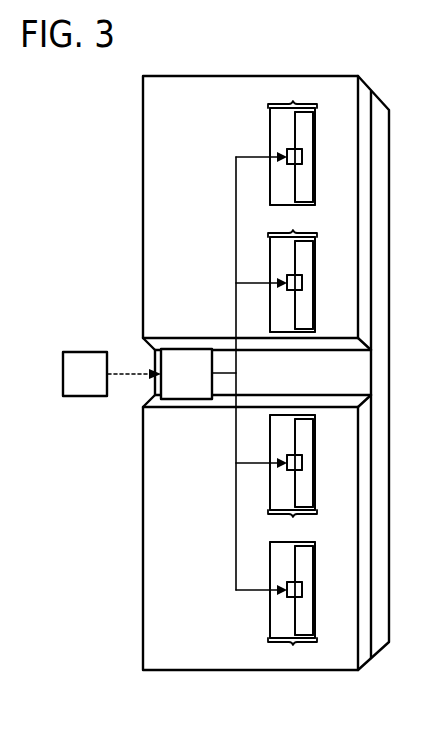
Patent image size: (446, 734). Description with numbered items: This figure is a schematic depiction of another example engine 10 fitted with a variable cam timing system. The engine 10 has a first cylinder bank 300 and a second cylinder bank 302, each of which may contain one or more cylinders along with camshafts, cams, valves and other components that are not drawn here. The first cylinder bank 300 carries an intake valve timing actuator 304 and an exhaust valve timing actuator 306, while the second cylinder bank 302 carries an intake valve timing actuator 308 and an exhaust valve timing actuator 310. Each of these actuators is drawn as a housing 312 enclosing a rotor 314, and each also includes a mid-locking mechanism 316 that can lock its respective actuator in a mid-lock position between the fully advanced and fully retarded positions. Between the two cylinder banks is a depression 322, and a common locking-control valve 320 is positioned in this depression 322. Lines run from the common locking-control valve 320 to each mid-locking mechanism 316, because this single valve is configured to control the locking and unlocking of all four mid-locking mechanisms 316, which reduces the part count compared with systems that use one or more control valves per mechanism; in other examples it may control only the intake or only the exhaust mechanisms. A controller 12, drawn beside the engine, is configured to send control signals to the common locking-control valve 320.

The engine 10 is at (227, 66).
The controller 12 is at (94, 384).
The first cylinder bank 300 is at (143, 143).
The second cylinder bank 302 is at (143, 443).
The intake valve timing actuator 304 is at (292, 140).
The exhaust valve timing actuator 306 is at (292, 270).
The intake valve timing actuator 308 is at (292, 479).
The exhaust valve timing actuator 310 is at (292, 607).
The housing 312 is at (270, 117).
The rotor 314 is at (313, 148).
The mid-locking mechanism 316 is at (302, 157).
The common locking-control valve 320 is at (200, 384).
The depression 322 is at (309, 377).